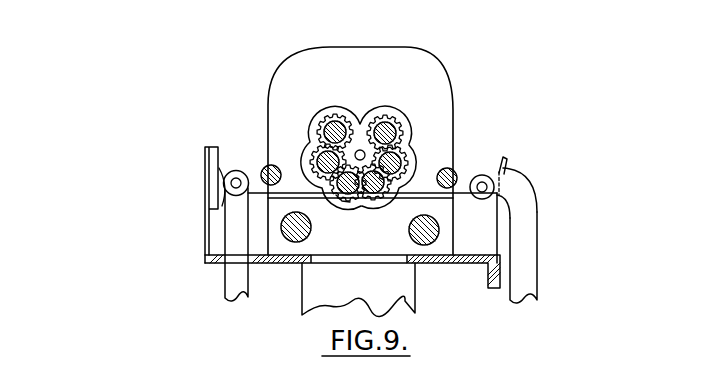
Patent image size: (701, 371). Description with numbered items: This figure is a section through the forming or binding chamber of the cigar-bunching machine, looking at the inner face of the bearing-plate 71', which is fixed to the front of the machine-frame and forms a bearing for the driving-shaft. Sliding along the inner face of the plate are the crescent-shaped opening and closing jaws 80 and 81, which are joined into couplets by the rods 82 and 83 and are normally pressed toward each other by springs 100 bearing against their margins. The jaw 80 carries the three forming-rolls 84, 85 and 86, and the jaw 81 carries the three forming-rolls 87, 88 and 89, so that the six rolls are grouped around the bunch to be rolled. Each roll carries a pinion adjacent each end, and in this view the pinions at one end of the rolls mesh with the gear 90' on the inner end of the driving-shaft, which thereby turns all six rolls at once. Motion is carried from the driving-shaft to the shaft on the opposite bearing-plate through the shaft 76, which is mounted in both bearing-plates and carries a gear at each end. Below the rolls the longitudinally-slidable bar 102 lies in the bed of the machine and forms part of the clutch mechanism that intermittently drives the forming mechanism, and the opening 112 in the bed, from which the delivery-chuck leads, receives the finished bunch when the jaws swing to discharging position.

The bearing-plate 71' is at (360, 136).
The forming-roll 87 is at (333, 123).
The gear 90' is at (365, 119).
The forming-roll 84 is at (400, 128).
The forming-roll 85 is at (400, 162).
The forming-roll 88 is at (310, 196).
The forming-roll 89 is at (340, 195).
The forming-roll 86 is at (368, 200).
The jaw 80 is at (445, 176).
The rod 82 is at (500, 170).
The spring 100 is at (212, 188).
The jaw 81 is at (283, 152).
The rod 83 is at (225, 182).
The shaft 76 is at (283, 232).
The longitudinally-slidable bar 102 is at (425, 235).
The opening 112 is at (343, 260).